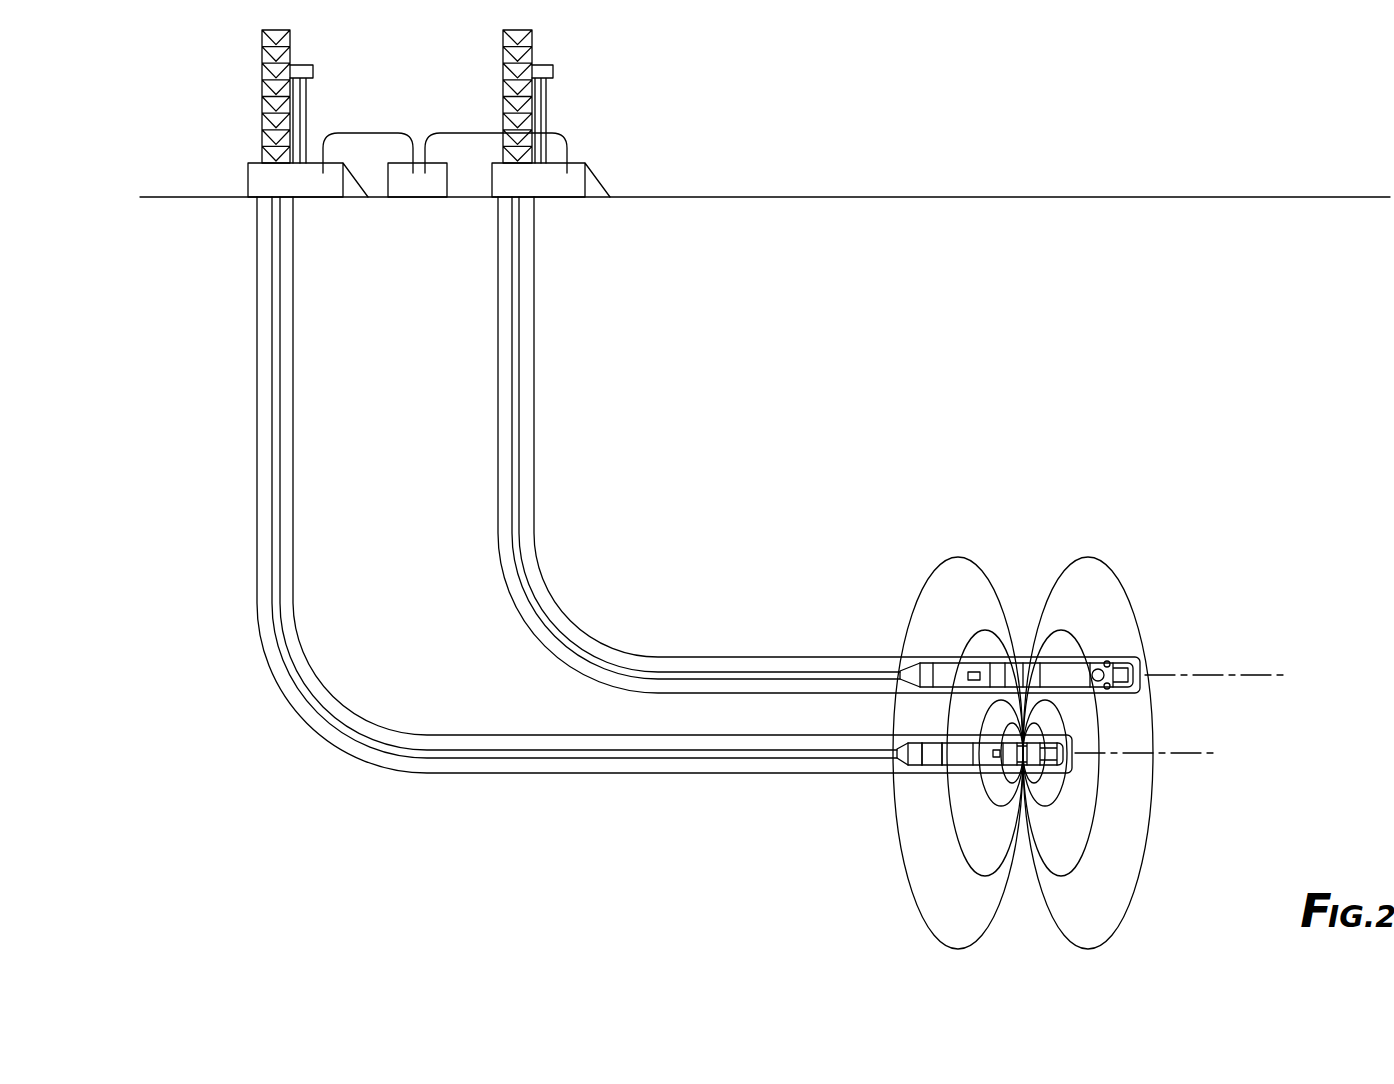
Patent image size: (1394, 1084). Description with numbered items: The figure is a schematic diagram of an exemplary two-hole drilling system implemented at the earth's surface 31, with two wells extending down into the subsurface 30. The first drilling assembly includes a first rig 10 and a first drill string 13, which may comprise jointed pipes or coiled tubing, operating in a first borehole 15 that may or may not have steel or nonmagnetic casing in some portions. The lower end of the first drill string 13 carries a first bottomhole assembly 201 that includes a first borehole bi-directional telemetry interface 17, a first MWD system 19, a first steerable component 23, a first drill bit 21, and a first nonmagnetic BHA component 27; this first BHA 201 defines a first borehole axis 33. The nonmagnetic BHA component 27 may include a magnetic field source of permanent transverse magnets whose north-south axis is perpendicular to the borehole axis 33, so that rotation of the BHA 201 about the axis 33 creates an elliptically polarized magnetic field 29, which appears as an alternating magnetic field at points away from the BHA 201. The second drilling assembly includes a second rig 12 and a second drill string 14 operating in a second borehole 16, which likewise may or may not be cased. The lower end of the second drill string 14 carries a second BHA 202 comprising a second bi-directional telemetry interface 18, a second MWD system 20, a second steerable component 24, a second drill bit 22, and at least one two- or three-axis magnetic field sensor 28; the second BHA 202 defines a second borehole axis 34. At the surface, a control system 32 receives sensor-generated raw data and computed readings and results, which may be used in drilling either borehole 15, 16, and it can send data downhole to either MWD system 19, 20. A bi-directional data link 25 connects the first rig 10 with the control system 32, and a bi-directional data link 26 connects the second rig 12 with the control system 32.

The first rig 10 is at (262, 70).
The second rig 12 is at (532, 50).
The first drill string 13 is at (278, 353).
The second drill string 14 is at (519, 338).
The first borehole 15 is at (293, 445).
The second borehole 16 is at (534, 407).
The first borehole bi-directional telemetry interface 17 is at (913, 755).
The second bi-directional telemetry interface 18 is at (930, 674).
The first MWD system 19 is at (933, 757).
The second MWD system 20 is at (997, 668).
The first drill bit 21 is at (1063, 747).
The second drill bit 22 is at (1143, 660).
The first steerable component 23 is at (985, 757).
The second steerable component 24 is at (1083, 665).
The bi-directional data link 25 is at (370, 133).
The bi-directional data link 26 is at (468, 133).
The first nonmagnetic BHA component 27 is at (1037, 767).
The magnetic field sensor 28 is at (967, 667).
The magnetic field 29 is at (1057, 580).
The subsurface 30 is at (769, 331).
The earth's surface 31 is at (733, 197).
The control system 32 is at (425, 200).
The first borehole axis 33 is at (1197, 753).
The second borehole axis 34 is at (1250, 675).
The first bottomhole assembly 201 is at (958, 767).
The second bottomhole assembly 202 is at (1030, 655).